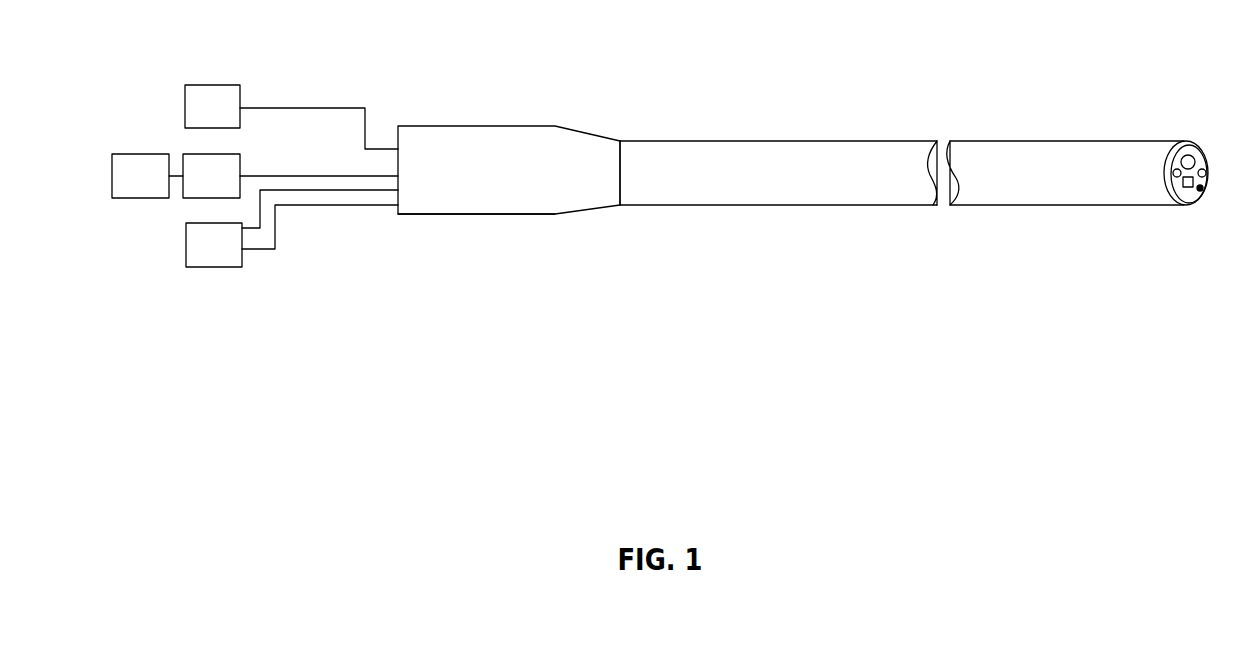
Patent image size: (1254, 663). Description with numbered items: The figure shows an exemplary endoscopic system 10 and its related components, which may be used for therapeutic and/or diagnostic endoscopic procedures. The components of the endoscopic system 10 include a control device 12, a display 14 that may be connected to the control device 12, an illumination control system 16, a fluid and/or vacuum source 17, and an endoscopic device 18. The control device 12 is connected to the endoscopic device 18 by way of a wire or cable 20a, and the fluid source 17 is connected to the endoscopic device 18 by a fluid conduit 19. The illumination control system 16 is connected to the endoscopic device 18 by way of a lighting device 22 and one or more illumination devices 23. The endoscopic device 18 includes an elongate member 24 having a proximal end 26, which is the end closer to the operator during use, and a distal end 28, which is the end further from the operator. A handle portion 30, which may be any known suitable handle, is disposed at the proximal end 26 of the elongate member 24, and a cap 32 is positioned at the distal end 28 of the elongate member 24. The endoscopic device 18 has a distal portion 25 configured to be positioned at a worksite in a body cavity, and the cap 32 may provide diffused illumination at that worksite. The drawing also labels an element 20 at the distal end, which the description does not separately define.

The endoscopic system 10 is at (150, 58).
The control device 12 is at (206, 154).
The display 14 is at (134, 154).
The illumination control system 16 is at (186, 242).
The fluid and/or vacuum source 17 is at (212, 85).
The endoscopic device 18 is at (448, 110).
The fluid conduit 19 is at (306, 108).
The distal end face 20 is at (1187, 208).
The wire or cable 20a is at (302, 176).
The lighting device 22 is at (330, 191).
The illumination device 23 is at (280, 191).
The elongate member 24 is at (748, 208).
The distal portion 25 is at (1104, 122).
The proximal end 26 is at (623, 208).
The distal end 28 is at (1166, 207).
The handle portion 30 is at (470, 212).
The cap 32 is at (1210, 155).